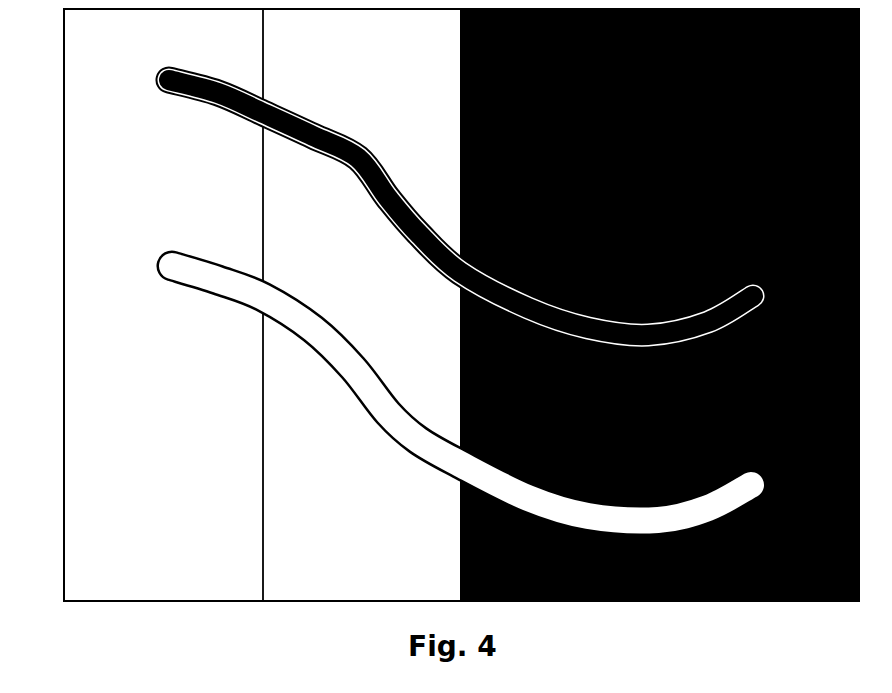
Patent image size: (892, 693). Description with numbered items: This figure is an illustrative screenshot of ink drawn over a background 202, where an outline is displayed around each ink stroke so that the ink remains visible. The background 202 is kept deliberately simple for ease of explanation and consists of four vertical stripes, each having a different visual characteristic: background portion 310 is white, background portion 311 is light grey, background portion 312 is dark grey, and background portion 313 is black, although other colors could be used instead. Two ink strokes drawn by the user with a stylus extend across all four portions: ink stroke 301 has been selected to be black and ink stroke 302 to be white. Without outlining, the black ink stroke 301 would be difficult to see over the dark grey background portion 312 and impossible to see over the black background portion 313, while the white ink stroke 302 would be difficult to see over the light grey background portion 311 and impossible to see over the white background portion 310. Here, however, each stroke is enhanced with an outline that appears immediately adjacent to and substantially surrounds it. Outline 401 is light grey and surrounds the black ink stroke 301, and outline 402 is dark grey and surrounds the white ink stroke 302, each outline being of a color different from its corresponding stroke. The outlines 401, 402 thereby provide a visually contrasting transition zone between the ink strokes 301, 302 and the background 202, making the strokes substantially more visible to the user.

The background 202 is at (56, 455).
The ink stroke 301 is at (163, 83).
The ink stroke 302 is at (160, 260).
The background portion 310 is at (180, 480).
The background portion 311 is at (346, 480).
The background portion 312 is at (560, 305).
The background portion 313 is at (758, 305).
The outline 401 is at (187, 93).
The outline 402 is at (172, 275).